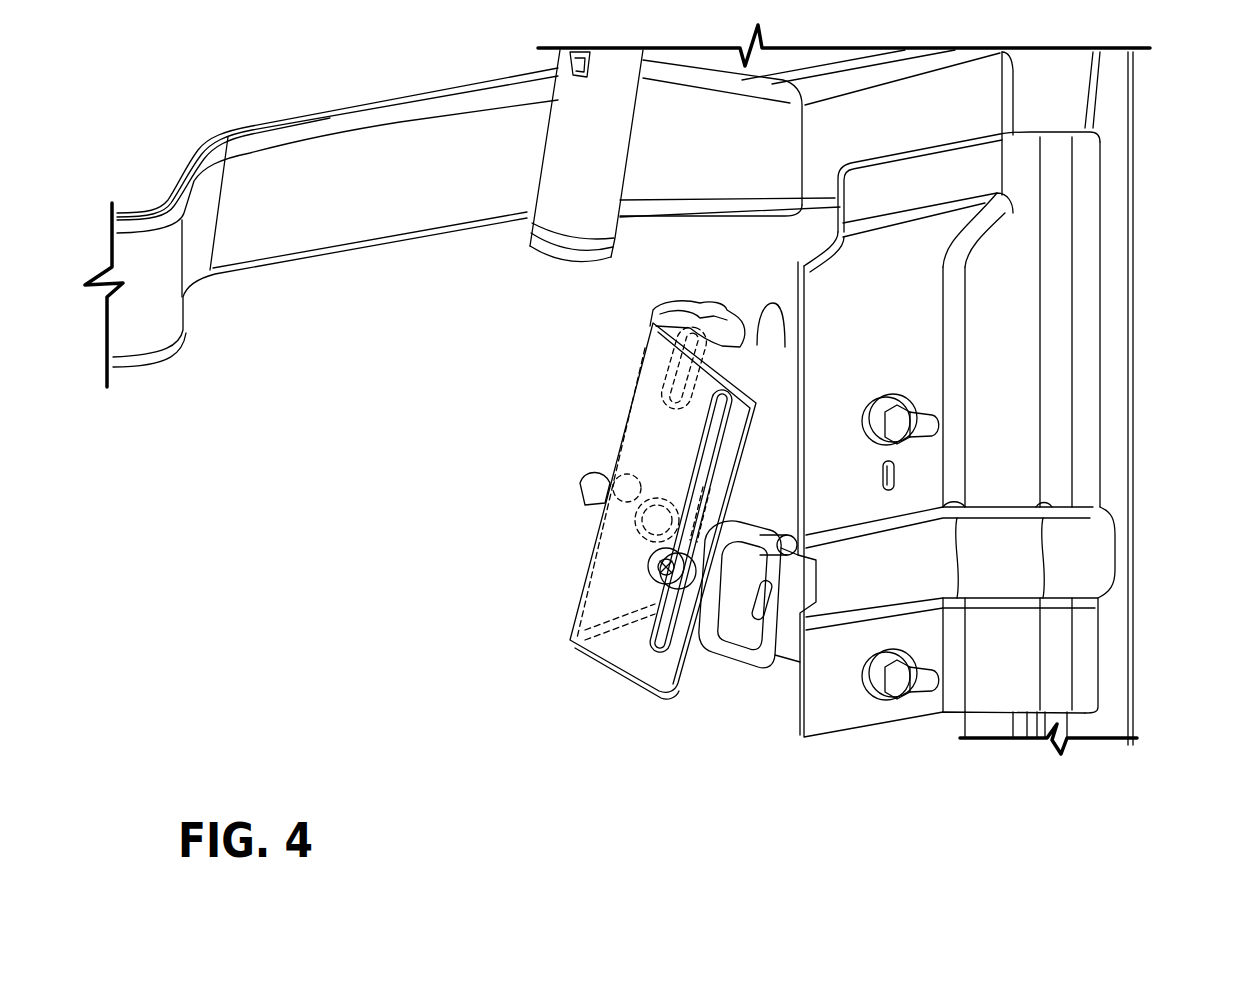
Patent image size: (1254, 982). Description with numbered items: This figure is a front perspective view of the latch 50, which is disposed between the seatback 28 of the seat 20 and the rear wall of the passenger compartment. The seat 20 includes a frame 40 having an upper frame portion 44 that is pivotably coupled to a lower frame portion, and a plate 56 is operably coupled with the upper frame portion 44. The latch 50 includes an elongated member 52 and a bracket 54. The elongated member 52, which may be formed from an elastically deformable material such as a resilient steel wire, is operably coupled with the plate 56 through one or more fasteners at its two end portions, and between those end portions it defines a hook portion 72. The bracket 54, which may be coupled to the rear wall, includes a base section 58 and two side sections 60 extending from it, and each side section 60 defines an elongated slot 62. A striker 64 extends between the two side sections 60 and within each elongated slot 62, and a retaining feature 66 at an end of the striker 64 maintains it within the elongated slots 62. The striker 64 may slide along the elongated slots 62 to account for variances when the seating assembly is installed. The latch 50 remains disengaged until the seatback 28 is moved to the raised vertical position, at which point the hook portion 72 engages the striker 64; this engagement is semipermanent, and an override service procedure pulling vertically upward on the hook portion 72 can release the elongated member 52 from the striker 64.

The seat 20 is at (1108, 293).
The seatback 28 is at (1112, 227).
The frame 40 is at (1118, 712).
The upper frame portion 44 is at (1107, 495).
The latch 50 is at (727, 703).
The elongated member 52 is at (787, 670).
The bracket 54 is at (627, 650).
The plate 56 is at (920, 355).
The base section 58 is at (735, 340).
The side section 60 is at (783, 345).
The elongated slot 62 is at (697, 473).
The striker 64 is at (710, 630).
The retaining feature 66 is at (655, 570).
The hook portion 72 is at (728, 557).